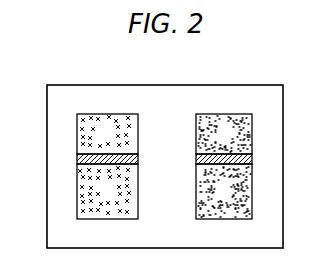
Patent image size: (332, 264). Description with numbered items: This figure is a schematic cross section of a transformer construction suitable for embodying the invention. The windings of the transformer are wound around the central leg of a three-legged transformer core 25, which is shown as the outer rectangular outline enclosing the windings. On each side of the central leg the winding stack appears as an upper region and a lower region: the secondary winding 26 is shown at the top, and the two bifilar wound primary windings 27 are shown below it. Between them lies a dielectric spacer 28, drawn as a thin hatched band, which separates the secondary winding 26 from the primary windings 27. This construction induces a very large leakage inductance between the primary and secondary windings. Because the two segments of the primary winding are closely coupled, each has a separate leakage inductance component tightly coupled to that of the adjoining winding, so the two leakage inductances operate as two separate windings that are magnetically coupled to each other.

The three-legged transformer core 25 is at (130, 93).
The secondary winding 26 is at (196, 132).
The bifilar wound primary windings 27 is at (138, 192).
The dielectric spacer 28 is at (196, 159).